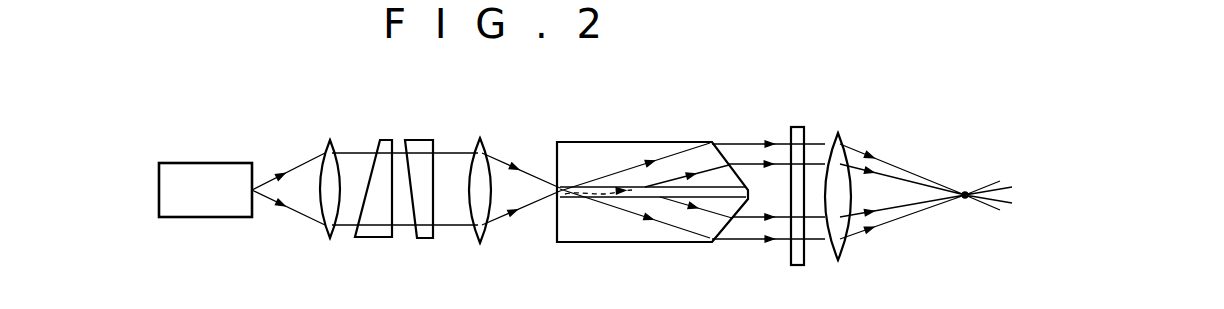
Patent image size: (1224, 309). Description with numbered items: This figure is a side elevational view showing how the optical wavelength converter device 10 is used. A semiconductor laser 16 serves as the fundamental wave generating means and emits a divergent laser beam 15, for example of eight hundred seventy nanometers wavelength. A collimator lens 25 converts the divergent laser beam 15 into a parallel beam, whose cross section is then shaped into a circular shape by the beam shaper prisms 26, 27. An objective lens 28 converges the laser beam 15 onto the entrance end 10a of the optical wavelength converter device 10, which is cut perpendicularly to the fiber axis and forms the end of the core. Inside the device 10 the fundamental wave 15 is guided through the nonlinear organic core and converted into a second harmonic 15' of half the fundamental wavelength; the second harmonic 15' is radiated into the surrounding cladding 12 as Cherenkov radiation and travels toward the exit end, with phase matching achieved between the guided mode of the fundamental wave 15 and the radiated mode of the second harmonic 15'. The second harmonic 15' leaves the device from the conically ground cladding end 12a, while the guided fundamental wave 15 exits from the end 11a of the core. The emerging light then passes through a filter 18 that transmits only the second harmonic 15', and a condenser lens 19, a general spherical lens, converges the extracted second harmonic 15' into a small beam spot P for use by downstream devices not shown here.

The semiconductor laser 16 is at (208, 178).
The laser beam 15 is at (442, 203).
The collimator lens 25 is at (334, 140).
The beam shaper prism 26 is at (384, 140).
The beam shaper prism 27 is at (424, 140).
The objective lens 28 is at (490, 138).
The optical wavelength converter device 10 is at (736, 173).
The entrance end 10a is at (556, 190).
The cladding 12 is at (587, 160).
The cladding end 12a is at (737, 217).
The end of the core 11a is at (755, 200).
The second harmonic 15' is at (762, 186).
The filter 18 is at (800, 127).
The condenser lens 19 is at (843, 146).
The beam spot P is at (966, 192).